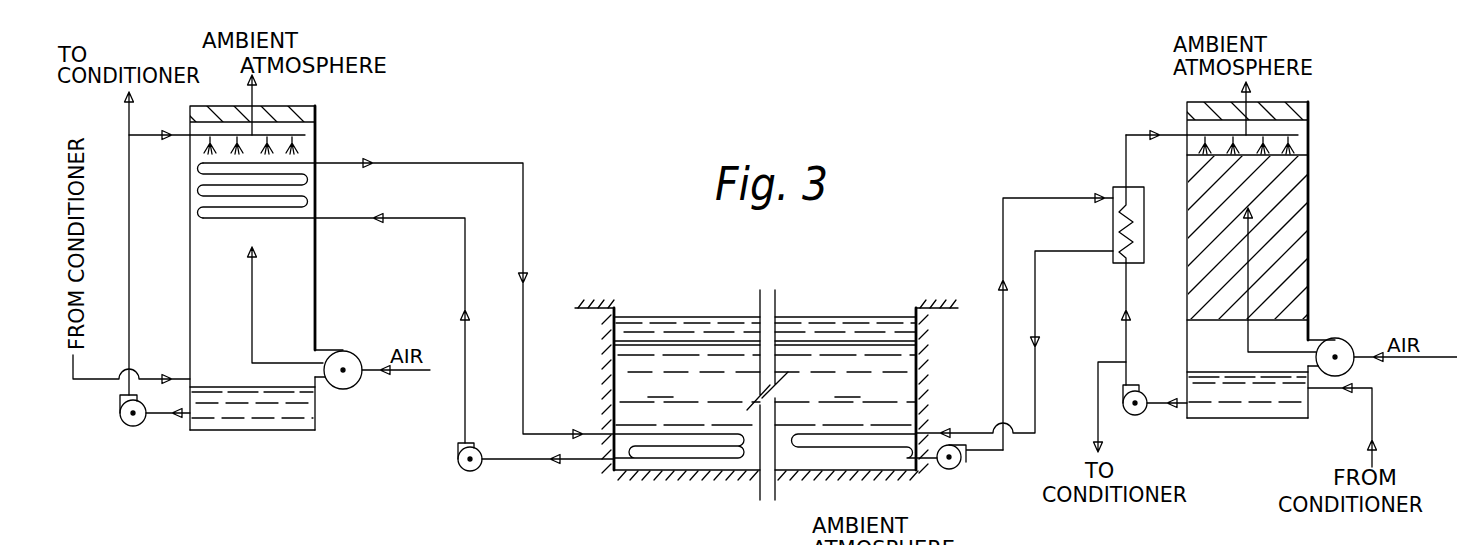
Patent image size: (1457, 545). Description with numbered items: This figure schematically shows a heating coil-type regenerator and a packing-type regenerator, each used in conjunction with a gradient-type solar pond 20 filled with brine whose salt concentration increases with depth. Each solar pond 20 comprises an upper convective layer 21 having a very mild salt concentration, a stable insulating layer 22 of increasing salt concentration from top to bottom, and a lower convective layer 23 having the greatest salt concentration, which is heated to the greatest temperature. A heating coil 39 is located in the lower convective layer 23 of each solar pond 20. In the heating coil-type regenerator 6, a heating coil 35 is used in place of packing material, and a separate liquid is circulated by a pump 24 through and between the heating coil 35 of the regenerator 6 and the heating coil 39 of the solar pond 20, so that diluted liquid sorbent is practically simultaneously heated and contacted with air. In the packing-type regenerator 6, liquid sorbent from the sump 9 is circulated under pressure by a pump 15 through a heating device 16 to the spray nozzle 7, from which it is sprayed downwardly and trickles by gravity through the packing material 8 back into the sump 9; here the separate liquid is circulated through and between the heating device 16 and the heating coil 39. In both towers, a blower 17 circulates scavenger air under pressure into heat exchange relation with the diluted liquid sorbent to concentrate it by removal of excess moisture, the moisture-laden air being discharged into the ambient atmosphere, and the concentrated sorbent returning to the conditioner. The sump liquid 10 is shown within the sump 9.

The regenerator 6 is at (305, 102).
The spray nozzle 7 is at (290, 138).
The packing material 8 is at (1297, 200).
The sump 9 is at (316, 415).
The water in sump 10 is at (272, 415).
The pump 15 is at (123, 425).
The heating device 16 is at (1117, 187).
The blower 17 is at (337, 352).
The solar pond 20 is at (670, 314).
The upper convective layer 21 is at (632, 330).
The stable insulating layer 22 is at (765, 371).
The lower convective layer 23 is at (638, 464).
The pump 24 is at (975, 490).
The heating coil 35 is at (203, 190).
The heating coil 39 is at (675, 462).